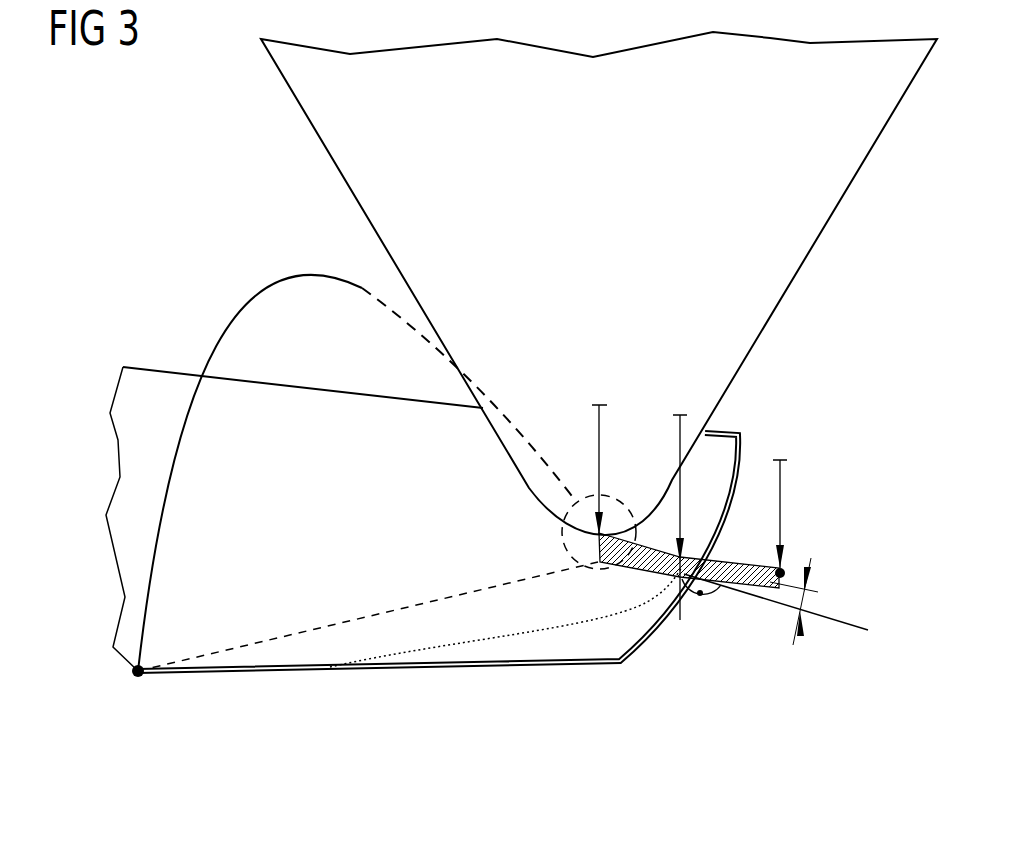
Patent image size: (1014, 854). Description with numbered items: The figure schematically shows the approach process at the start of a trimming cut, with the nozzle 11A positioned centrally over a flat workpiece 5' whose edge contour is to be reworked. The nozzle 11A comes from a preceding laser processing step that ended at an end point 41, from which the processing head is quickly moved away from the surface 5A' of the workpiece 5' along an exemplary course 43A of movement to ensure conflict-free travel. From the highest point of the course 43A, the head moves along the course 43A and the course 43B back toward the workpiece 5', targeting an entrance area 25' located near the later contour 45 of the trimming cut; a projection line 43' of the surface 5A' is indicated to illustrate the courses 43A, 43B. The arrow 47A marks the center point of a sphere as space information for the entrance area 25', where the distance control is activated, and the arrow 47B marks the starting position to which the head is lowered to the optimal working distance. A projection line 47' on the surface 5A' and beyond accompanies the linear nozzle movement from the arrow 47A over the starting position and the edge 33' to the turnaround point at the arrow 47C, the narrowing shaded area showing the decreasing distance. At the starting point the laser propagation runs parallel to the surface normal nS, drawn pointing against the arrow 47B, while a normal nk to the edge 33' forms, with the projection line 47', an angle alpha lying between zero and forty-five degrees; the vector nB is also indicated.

The nozzle 11A is at (308, 118).
The workpiece 5' is at (303, 357).
The surface of the workpiece 5A' is at (94, 519).
The course of movement 43A is at (175, 477).
The course of movement 43B is at (390, 314).
The projection line 43' is at (368, 602).
The end point 41 is at (137, 679).
The contour of the trimming cut 45 is at (516, 650).
The edge 33' is at (438, 576).
The arrow 47A is at (597, 421).
The arrow 47B is at (677, 452).
The arrow 47C is at (783, 511).
The entrance area 25' is at (564, 532).
The projection line 47' is at (665, 572).
The normal vector B nB is at (585, 563).
The normal of the workpiece surface nS is at (673, 586).
The normal to the course of the workpiece edge nk is at (744, 595).
The angle alpha is at (802, 601).